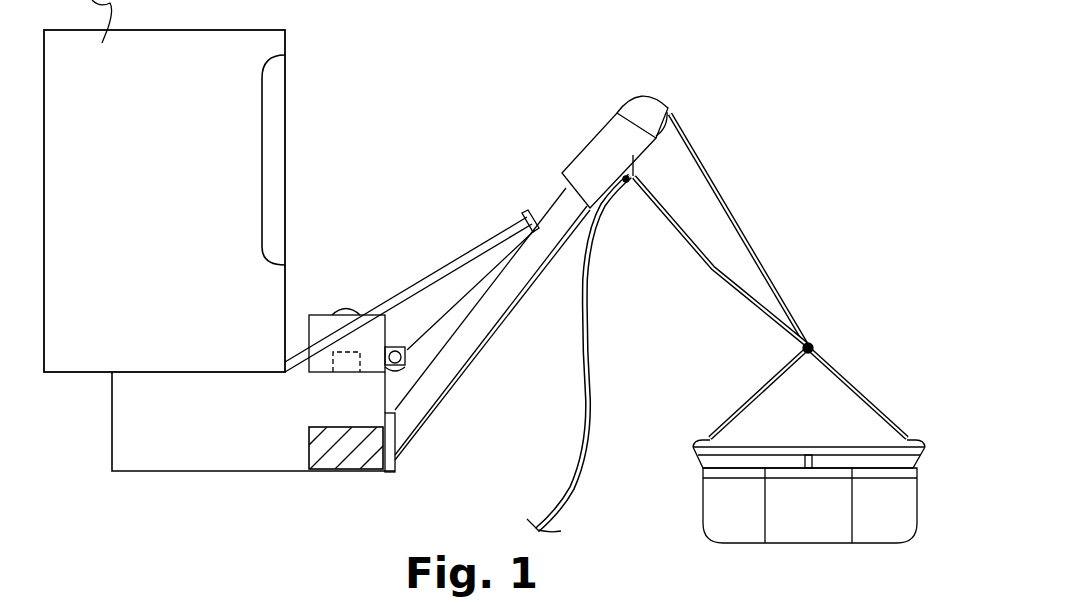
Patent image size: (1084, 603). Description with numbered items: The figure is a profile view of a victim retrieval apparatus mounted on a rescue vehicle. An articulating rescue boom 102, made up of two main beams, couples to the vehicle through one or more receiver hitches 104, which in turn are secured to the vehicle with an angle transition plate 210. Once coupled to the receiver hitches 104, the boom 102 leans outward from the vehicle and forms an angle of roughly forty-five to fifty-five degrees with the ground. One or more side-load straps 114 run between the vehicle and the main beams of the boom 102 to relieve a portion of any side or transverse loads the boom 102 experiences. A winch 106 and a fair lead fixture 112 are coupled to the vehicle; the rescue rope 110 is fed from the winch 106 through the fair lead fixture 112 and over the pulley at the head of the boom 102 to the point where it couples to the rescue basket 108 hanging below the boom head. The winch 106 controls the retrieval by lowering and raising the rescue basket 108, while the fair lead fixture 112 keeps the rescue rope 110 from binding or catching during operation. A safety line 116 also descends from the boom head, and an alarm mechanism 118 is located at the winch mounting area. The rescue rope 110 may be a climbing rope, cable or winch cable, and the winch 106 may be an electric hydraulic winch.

The boom 102 is at (476, 352).
The receiver hitch 104 is at (347, 452).
The winch 106 is at (328, 330).
The rescue basket 108 is at (907, 520).
The rescue rope 110 is at (786, 316).
The fair lead fixture 112 is at (400, 346).
The side-load strap 114 is at (453, 267).
The safety line 116 is at (587, 333).
The alarm mechanism 118 is at (352, 352).
The angle transition plate 210 is at (390, 462).